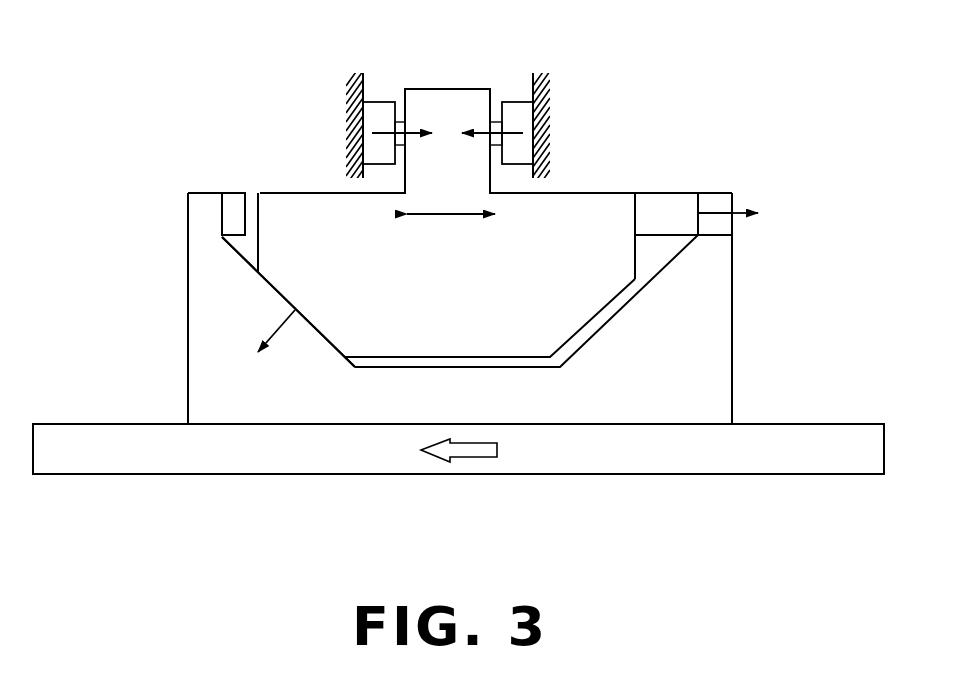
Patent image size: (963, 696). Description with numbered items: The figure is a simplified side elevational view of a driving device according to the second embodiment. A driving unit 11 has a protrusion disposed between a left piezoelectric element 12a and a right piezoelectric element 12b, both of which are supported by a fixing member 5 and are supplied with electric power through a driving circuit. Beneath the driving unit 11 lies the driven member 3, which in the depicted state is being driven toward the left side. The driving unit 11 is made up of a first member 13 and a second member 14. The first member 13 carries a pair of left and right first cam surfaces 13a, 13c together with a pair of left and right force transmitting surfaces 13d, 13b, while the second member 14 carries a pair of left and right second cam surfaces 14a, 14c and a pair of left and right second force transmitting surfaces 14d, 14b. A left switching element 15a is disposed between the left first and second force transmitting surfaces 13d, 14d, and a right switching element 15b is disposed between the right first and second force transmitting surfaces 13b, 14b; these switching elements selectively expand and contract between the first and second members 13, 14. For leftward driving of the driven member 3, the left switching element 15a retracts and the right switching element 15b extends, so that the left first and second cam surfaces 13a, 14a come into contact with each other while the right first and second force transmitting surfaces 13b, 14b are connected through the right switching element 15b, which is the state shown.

The driven member 3 is at (78, 421).
The fixing member 5 is at (365, 79).
The driving unit 11 is at (742, 185).
The left piezoelectric element 12a is at (377, 110).
The right piezoelectric element 12b is at (518, 110).
The first member 13 is at (580, 191).
The left first cam surface 13a is at (276, 300).
The right first force transmitting surface 13b is at (634, 216).
The right first cam surface 13c is at (612, 312).
The left first force transmitting surface 13d is at (256, 198).
The second member 14 is at (186, 347).
The left second cam surface 14a is at (336, 343).
The right second force transmitting surface 14b is at (688, 196).
The right second cam surface 14c is at (592, 330).
The left second force transmitting surface 14d is at (220, 210).
The left switching element 15a is at (233, 200).
The right switching element 15b is at (664, 205).